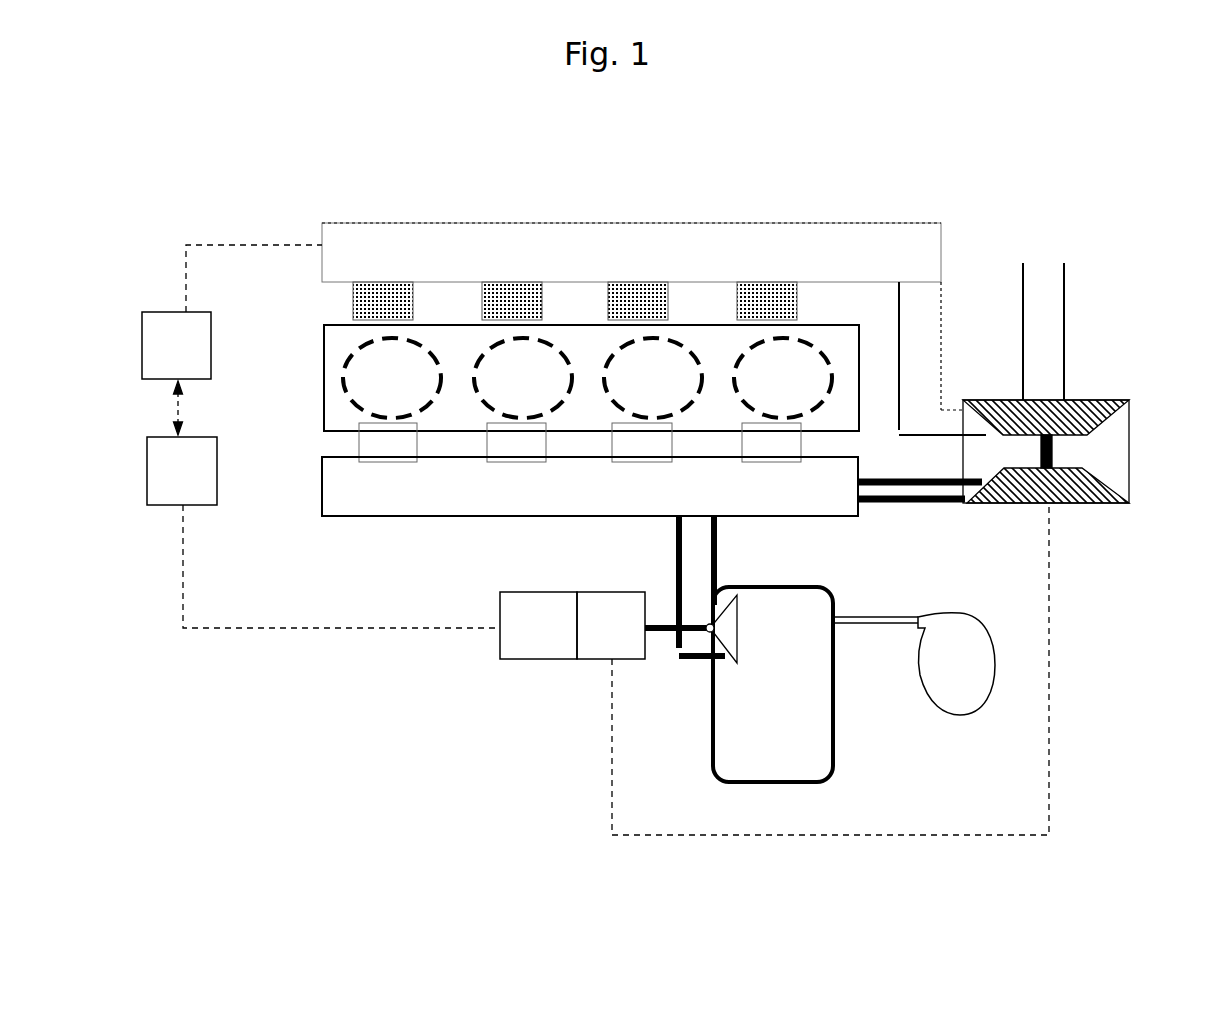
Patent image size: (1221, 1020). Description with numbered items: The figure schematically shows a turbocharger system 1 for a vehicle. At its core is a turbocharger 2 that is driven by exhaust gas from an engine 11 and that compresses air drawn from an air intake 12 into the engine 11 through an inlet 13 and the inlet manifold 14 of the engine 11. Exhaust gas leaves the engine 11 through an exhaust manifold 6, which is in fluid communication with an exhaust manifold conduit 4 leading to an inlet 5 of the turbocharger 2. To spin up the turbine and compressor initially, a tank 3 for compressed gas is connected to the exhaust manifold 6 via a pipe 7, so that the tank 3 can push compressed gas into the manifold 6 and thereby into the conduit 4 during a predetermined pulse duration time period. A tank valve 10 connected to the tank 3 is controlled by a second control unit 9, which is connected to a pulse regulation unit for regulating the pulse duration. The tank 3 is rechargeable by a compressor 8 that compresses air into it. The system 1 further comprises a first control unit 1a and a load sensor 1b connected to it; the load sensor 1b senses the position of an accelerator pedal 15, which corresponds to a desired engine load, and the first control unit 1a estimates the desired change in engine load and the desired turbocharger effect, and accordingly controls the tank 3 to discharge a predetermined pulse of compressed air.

The turbocharger system 1 is at (442, 642).
The first control unit 1a is at (520, 643).
The load sensor 1b is at (163, 486).
The turbocharger 2 is at (1112, 515).
The tank 3 is at (767, 721).
The exhaust manifold conduit 4 is at (948, 515).
The inlet 5 is at (980, 503).
The exhaust manifold 6 is at (565, 501).
The pipe 7 is at (664, 558).
The compressor 8 is at (945, 686).
The second control unit 9 is at (601, 635).
The tank valve 10 is at (724, 634).
The engine 11 is at (379, 395).
The air intake 12 is at (1068, 312).
The inlet 13 is at (947, 341).
The inlet manifold 14 is at (589, 272).
The accelerator pedal 15 is at (158, 362).